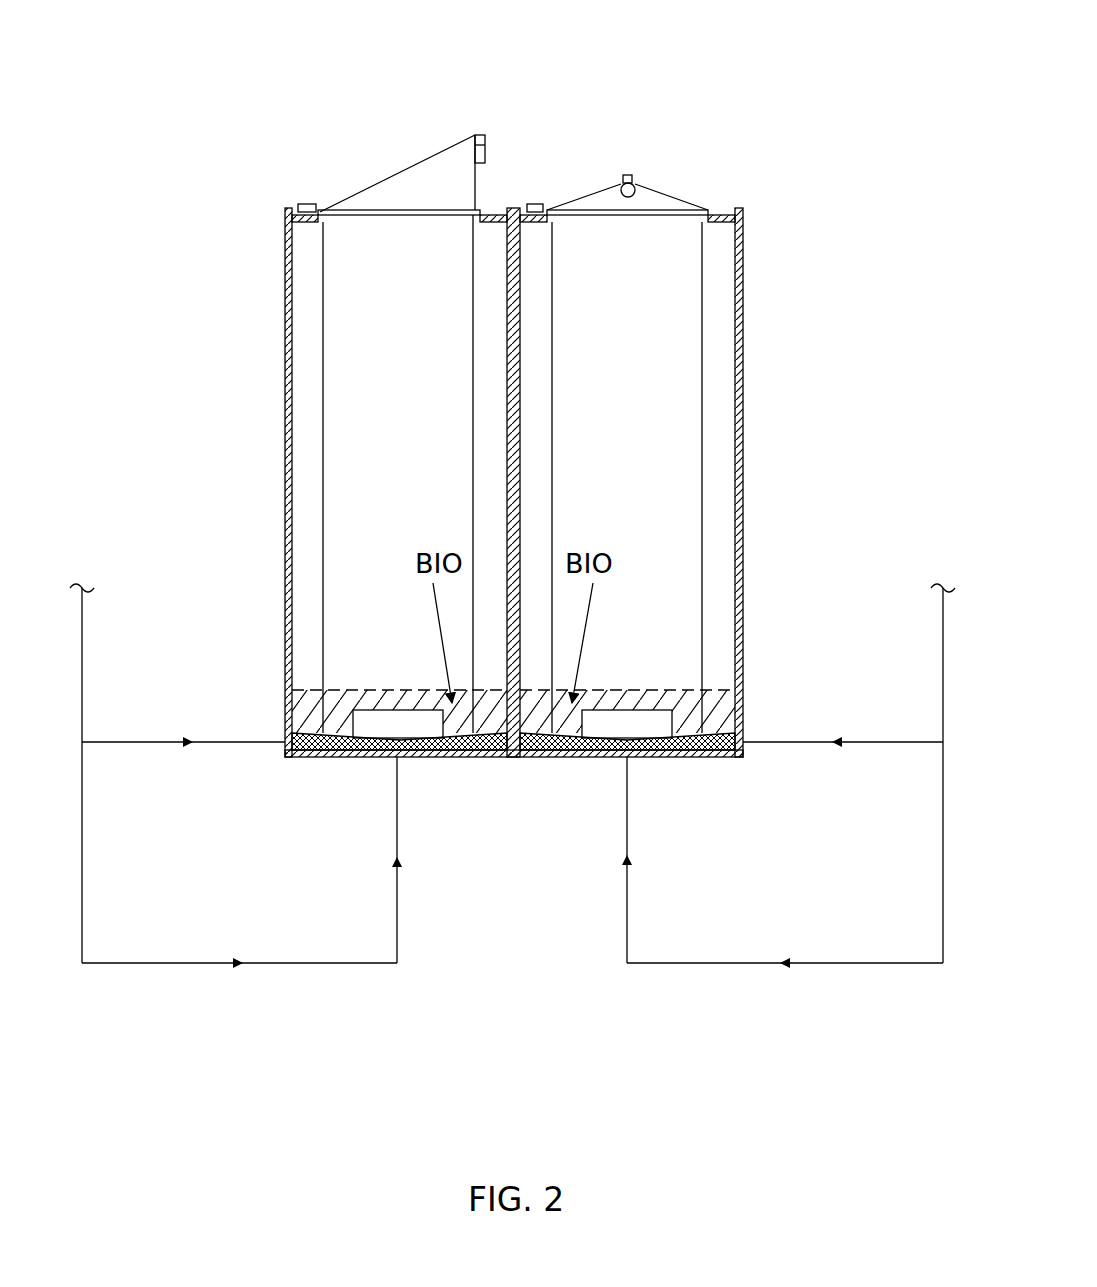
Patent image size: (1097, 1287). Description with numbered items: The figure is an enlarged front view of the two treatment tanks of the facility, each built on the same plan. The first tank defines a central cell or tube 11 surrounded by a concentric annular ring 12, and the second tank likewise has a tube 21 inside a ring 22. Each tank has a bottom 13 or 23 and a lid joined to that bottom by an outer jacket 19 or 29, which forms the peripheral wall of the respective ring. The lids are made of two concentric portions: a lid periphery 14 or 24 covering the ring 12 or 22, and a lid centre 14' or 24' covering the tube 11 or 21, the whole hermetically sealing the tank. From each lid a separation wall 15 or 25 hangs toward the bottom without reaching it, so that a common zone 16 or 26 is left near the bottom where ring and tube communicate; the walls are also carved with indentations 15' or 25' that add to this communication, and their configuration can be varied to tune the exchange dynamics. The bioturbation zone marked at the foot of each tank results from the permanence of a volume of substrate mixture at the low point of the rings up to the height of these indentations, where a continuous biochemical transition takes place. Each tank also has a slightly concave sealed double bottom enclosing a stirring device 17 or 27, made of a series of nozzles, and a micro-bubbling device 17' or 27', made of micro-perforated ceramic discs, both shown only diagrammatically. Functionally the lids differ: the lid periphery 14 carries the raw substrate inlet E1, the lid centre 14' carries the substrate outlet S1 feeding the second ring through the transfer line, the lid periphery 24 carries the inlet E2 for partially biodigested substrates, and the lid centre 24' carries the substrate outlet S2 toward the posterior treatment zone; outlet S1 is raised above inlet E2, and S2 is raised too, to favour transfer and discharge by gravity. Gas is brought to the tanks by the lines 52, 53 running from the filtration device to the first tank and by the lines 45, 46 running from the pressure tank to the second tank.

The tube 11 is at (363, 278).
The ring 12 is at (317, 612).
The bottom 13 is at (337, 752).
The lid periphery 14 is at (260, 166).
The lid centre 14' is at (398, 136).
The separation wall 15 is at (294, 407).
The indentations 15' is at (392, 669).
The common zone 16 is at (303, 708).
The stirring device 17 is at (184, 765).
The micro-bubbling device 17' is at (366, 860).
The outer jacket 19 is at (283, 475).
The tube 21 is at (660, 278).
The ring 22 is at (712, 612).
The bottom 23 is at (687, 755).
The lid periphery 24 is at (747, 169).
The lid centre 24' is at (630, 151).
The separation wall 25 is at (733, 411).
The indentations 25' is at (633, 669).
The common zone 26 is at (708, 708).
The stirring device 27 is at (841, 764).
The micro-bubbling device 27' is at (659, 858).
The outer jacket 29 is at (742, 490).
The line from pressure tank to second tank 45 is at (835, 963).
The line from pressure tank to second tank 46 is at (900, 743).
The line from filtration device to first tank 52 is at (187, 963).
The line from filtration device to first tank 53 is at (123, 743).
The substrate outlet S1 is at (487, 147).
The substrate outlet S2 is at (630, 175).
The substrate inlet E1 is at (307, 204).
The supply line E2 is at (537, 204).